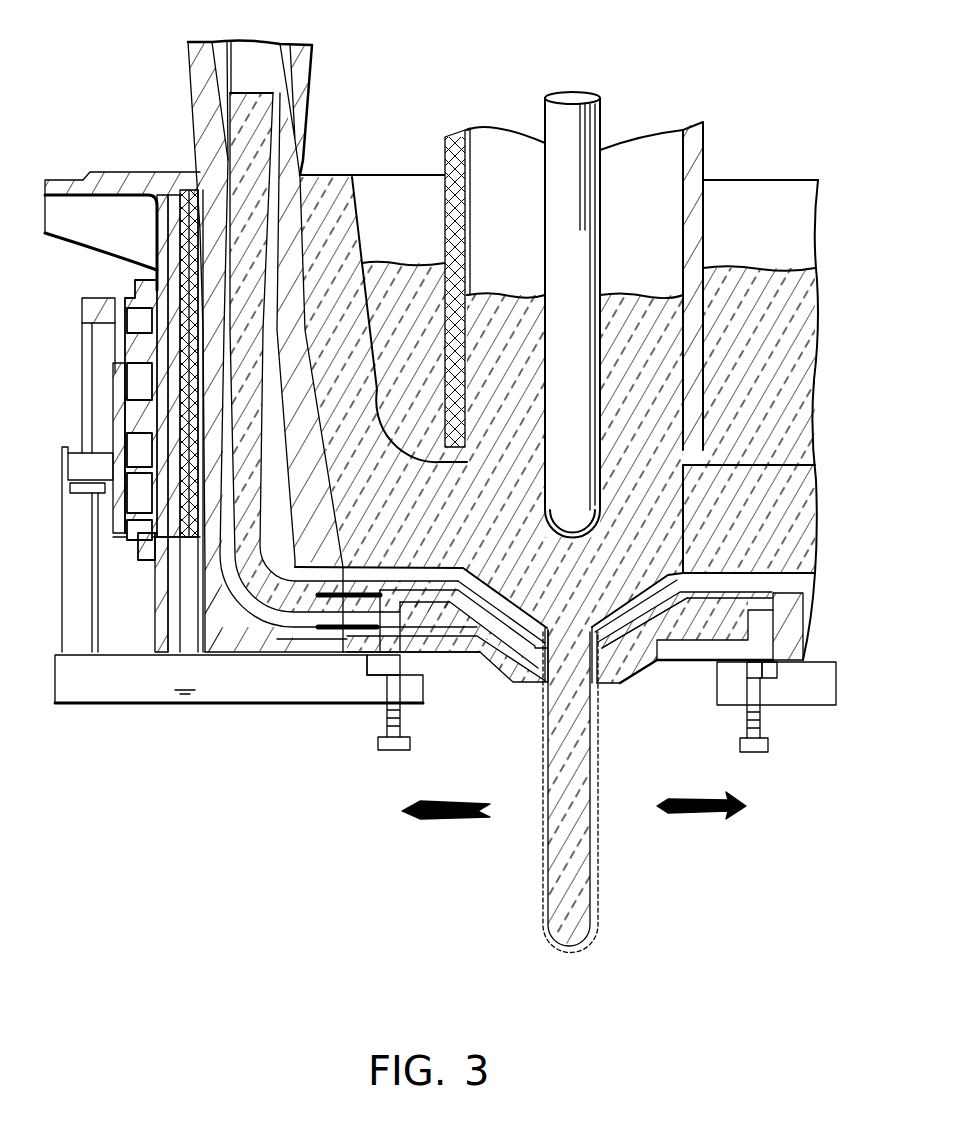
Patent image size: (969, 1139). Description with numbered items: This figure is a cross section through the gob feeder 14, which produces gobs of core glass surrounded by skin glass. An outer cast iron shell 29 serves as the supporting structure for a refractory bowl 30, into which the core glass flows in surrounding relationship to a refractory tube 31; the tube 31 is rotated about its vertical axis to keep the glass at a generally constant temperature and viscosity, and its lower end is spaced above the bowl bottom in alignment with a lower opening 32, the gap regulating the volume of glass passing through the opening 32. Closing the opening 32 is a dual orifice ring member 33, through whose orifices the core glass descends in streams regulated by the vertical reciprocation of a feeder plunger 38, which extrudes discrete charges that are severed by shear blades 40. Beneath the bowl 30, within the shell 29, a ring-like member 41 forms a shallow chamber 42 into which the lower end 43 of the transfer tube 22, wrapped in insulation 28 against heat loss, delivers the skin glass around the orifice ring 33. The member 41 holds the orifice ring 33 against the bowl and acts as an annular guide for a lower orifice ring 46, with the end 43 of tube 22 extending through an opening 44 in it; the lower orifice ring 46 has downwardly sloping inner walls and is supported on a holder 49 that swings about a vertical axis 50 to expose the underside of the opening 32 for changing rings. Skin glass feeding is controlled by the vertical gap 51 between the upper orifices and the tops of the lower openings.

The gob feeder 14 is at (332, 716).
The transfer tube 22 is at (278, 153).
The insulation 28 is at (312, 92).
The outer cast iron shell 29 is at (157, 570).
The refractory bowl 30 is at (360, 213).
The refractory tube 31 is at (705, 132).
The lower opening 32 is at (677, 503).
The dual orifice ring member 33 is at (790, 585).
The feeder plunger 38 is at (607, 123).
The shear blades 40 is at (687, 815).
The ring-like member 41 is at (790, 637).
The shallow chamber 42 is at (733, 610).
The lower end of the feeder tube 43 is at (327, 628).
The opening 44 is at (400, 612).
The lower orifice ring 46 is at (652, 670).
The holder 49 is at (827, 717).
The vertical axis 50 is at (77, 593).
The gap 51 is at (617, 683).